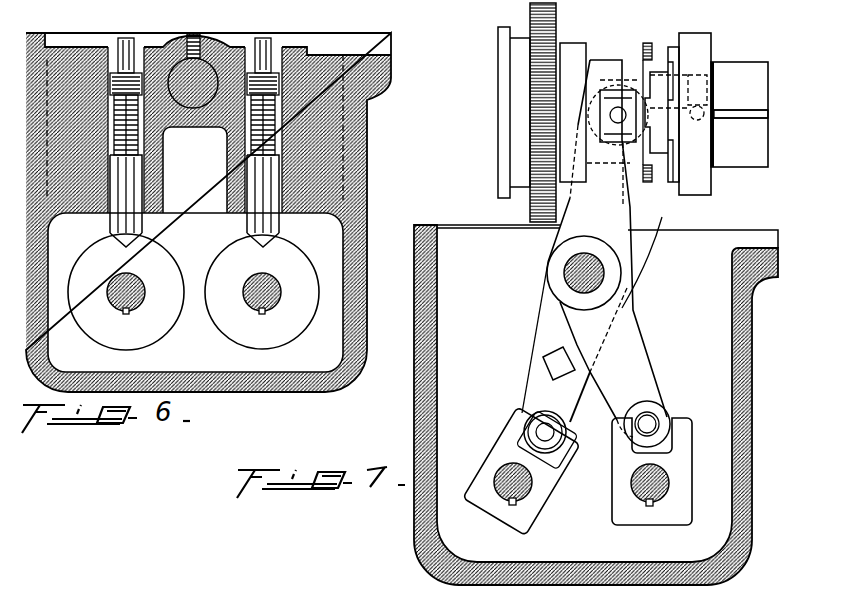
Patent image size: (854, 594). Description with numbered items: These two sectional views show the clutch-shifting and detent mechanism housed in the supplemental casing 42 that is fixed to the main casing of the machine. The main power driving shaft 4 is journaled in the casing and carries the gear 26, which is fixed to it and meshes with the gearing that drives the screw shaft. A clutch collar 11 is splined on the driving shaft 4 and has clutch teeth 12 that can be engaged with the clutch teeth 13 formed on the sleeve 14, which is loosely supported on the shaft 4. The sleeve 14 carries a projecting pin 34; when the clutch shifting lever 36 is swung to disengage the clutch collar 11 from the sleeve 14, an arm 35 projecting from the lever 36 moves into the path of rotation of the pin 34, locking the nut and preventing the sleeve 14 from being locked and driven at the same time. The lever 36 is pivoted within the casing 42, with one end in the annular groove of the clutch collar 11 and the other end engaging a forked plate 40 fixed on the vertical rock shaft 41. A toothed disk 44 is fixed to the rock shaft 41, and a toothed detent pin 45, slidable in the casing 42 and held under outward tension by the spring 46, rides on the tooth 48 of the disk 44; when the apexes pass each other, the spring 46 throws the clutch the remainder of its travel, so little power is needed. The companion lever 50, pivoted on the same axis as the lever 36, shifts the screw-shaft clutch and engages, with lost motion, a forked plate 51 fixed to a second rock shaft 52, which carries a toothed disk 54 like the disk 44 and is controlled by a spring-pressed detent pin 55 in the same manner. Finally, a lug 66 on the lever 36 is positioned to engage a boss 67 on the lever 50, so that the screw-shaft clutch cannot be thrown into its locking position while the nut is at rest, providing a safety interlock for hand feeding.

In FIG. 7, the main power driving shaft 4 is at (658, 137).
In FIG. 7, the clutch collar 11 is at (600, 67).
In FIG. 7, the clutch teeth 12 is at (651, 45).
In FIG. 7, the clutch teeth 13 is at (672, 48).
In FIG. 7, the sleeve 14 is at (702, 40).
In FIG. 7, the gear 26 is at (530, 212).
In FIG. 7, the pin 34 is at (708, 100).
In FIG. 7, the arm 35 is at (683, 73).
In FIG. 7, the clutch shifting lever 36 is at (567, 215).
In FIG. 7, the forked plate 40 is at (503, 433).
In FIG. 6, the rock shaft 41 is at (137, 305).
In FIG. 6, the supplemental casing 42 is at (343, 389).
In FIG. 7, the supplemental casing 42 is at (748, 412).
In FIG. 6, the toothed disk 44 is at (86, 266).
In FIG. 7, the toothed disk 44 is at (527, 495).
In FIG. 6, the toothed detent pin 45 is at (137, 226).
In FIG. 6, the spring 46 is at (137, 146).
In FIG. 6, the tooth 48 is at (138, 239).
In FIG. 7, the lever 50 is at (630, 205).
In FIG. 7, the forked plate 51 is at (683, 463).
In FIG. 6, the rock shaft 52 is at (278, 300).
In FIG. 7, the rock shaft 52 is at (665, 488).
In FIG. 6, the toothed disk 54 is at (280, 240).
In FIG. 6, the spring controlled detent pin 55 is at (275, 221).
In FIG. 7, the projecting lug 66 is at (553, 365).
In FIG. 7, the boss 67 is at (586, 362).